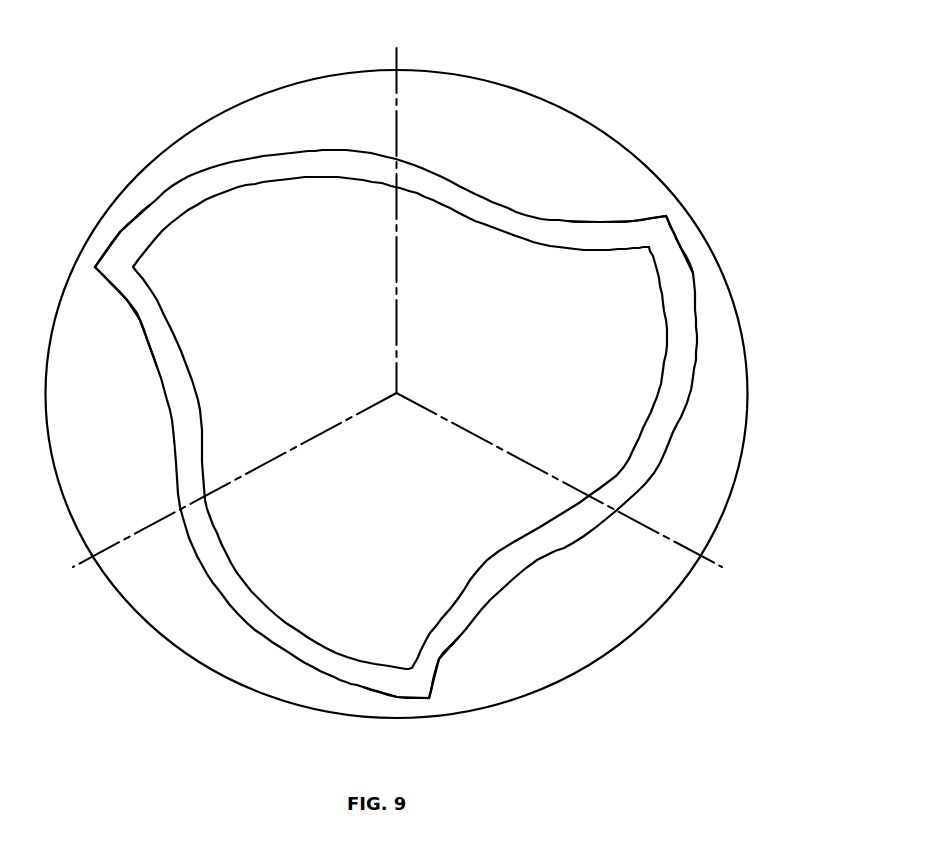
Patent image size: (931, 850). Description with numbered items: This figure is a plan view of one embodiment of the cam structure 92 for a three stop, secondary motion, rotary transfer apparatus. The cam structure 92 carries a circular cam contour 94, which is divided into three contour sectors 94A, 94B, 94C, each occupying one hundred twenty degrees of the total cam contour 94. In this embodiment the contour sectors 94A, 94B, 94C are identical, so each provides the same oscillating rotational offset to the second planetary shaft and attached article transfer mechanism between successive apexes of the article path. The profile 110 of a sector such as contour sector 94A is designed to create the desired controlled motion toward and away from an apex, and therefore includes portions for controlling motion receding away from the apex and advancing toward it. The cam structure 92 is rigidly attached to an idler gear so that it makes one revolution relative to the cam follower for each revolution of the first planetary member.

The cam structure 92 is at (563, 107).
The cam contour 94 is at (407, 162).
The contour sector 94A is at (627, 231).
The contour sector 94B is at (437, 655).
The contour sector 94C is at (152, 222).
The profile 110 is at (681, 256).